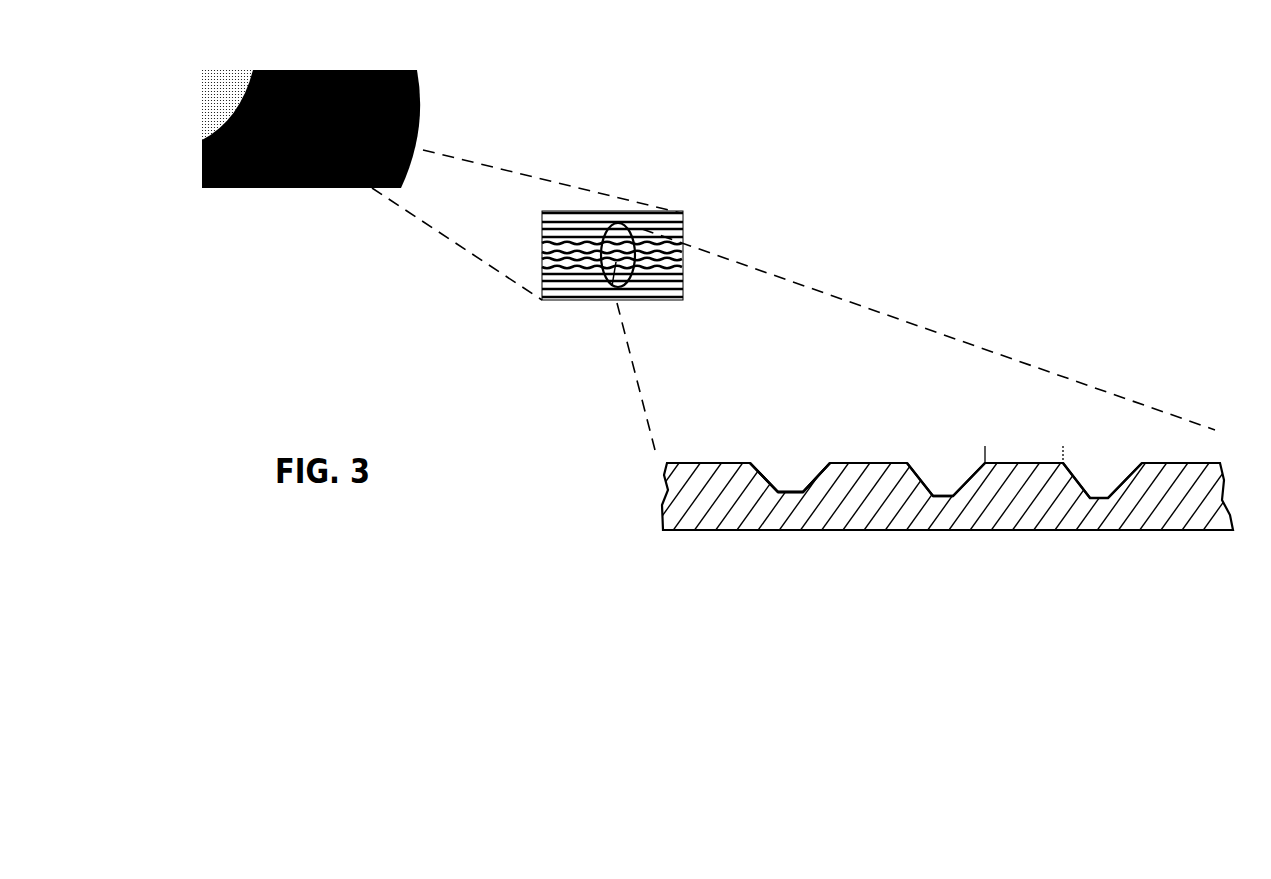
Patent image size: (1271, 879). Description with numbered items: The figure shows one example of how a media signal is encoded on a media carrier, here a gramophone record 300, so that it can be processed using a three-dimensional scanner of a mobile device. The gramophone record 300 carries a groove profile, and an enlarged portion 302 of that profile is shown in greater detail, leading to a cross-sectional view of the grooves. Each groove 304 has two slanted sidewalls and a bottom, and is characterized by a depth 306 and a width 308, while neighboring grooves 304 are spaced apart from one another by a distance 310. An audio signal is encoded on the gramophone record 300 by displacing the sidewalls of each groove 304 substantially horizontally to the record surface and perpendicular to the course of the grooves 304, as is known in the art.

The gramophone record 300 is at (432, 87).
The enlarged portion of the groove profile 302 is at (683, 215).
The groove 304 is at (1098, 458).
The depth 306 is at (791, 492).
The width 308 is at (828, 463).
The distance 310 is at (943, 496).